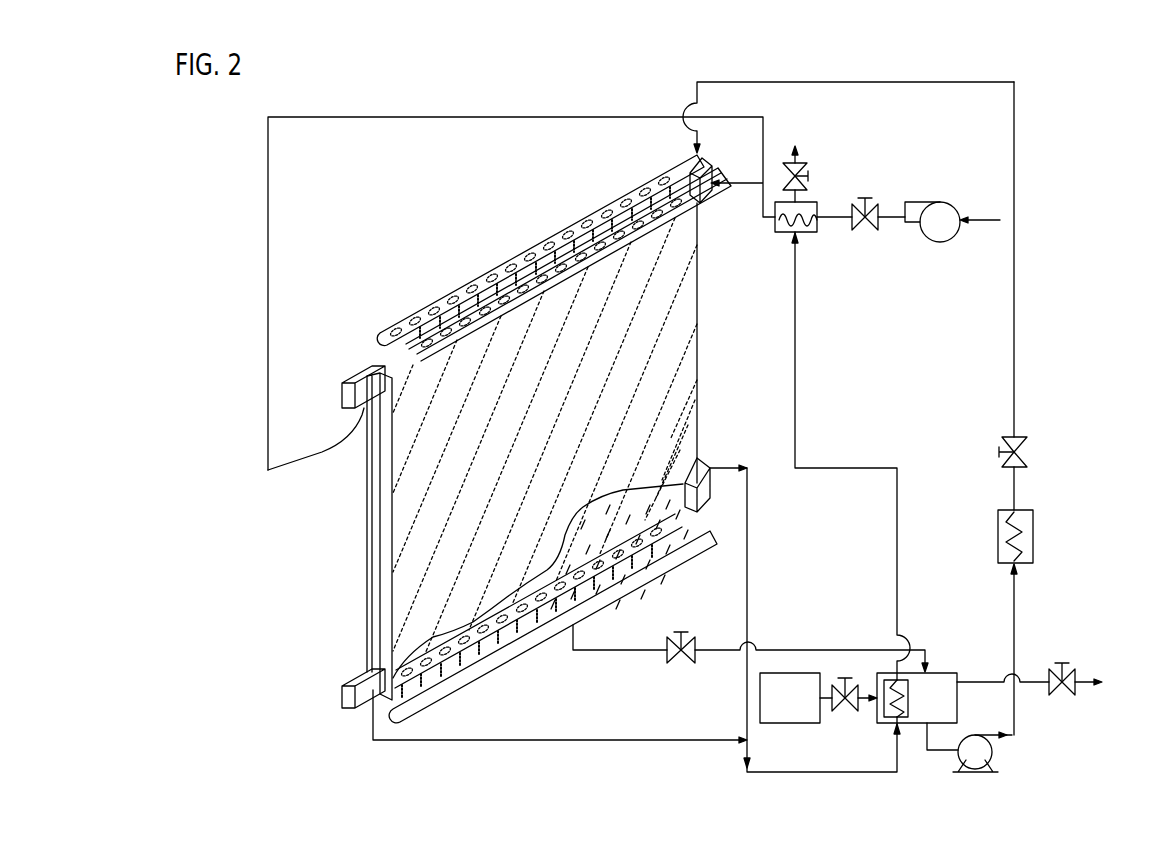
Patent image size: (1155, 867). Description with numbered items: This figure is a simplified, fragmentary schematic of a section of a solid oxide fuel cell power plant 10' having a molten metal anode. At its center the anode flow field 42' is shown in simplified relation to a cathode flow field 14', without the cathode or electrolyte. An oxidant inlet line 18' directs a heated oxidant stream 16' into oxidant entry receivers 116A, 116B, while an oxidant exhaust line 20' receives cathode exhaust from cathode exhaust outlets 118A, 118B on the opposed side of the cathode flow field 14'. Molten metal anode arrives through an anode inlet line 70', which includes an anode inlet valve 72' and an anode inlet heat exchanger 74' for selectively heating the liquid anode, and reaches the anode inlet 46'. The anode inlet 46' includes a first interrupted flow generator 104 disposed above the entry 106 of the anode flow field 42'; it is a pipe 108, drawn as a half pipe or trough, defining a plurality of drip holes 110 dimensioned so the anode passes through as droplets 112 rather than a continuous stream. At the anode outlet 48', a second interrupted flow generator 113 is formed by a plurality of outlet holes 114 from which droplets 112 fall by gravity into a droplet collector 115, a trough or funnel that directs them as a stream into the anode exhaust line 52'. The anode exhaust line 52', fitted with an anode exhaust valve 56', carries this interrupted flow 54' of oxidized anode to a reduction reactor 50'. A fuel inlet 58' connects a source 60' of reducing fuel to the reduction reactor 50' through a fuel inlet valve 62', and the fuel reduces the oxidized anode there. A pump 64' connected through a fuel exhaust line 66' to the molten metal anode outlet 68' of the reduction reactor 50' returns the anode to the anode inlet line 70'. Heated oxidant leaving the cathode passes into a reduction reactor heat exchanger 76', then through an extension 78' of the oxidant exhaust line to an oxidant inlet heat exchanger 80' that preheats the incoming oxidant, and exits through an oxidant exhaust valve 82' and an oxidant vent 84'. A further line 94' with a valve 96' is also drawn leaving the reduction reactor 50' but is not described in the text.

The power plant 10' is at (1101, 93).
The cathode flow field 14' is at (352, 536).
The oxidant stream 16' is at (908, 236).
The oxidant inlet line 18' is at (614, 276).
The oxidant exhaust line 20' is at (560, 737).
The anode flow field 42' is at (499, 581).
The anode inlet 46' is at (526, 416).
The anode outlet 48' is at (717, 507).
The reduction reactor 50' is at (923, 658).
The anode exhaust line 52' is at (805, 626).
The interrupted flow 54' is at (709, 560).
The anode exhaust valve 56' is at (750, 630).
The fuel inlet 58' is at (871, 726).
The source of reducing fuel 60' is at (766, 758).
The fuel inlet valve 62' is at (818, 663).
The pump 64' is at (969, 734).
The fuel exhaust line 66' is at (926, 767).
The molten metal anode outlet 68' is at (881, 750).
The anode inlet line 70' is at (1043, 259).
The anode inlet valve 72' is at (983, 457).
The anode inlet heat exchanger 74' is at (1037, 601).
The reduction reactor heat exchanger 76' is at (869, 638).
The extension of the oxidant exhaust line 78' is at (810, 502).
The oxidant inlet heat exchanger 80' is at (833, 238).
The oxidant exhaust valve 82' is at (833, 169).
The oxidant vent 84' is at (824, 140).
The outlet line 94' is at (1003, 655).
The outlet valve 96' is at (1066, 654).
The first interrupted flow generator 104 is at (385, 336).
The entry 106 is at (705, 205).
The pipe 108 is at (548, 240).
The drip holes 110 is at (525, 283).
The droplets 112 is at (676, 162).
The second interrupted flow generator 113 is at (382, 735).
The outlet holes 114 is at (690, 455).
The droplet collector 115 is at (505, 665).
The oxidant entry receiver 116A is at (712, 170).
The oxidant entry receiver 116B is at (340, 405).
The cathode exhaust outlet 118A is at (720, 458).
The cathode exhaust outlet 118B is at (345, 712).